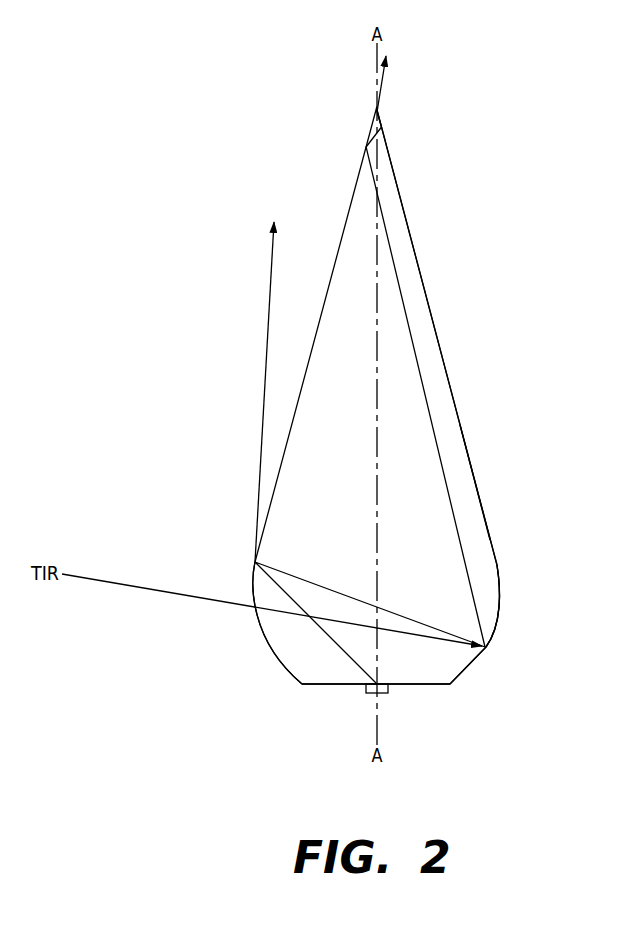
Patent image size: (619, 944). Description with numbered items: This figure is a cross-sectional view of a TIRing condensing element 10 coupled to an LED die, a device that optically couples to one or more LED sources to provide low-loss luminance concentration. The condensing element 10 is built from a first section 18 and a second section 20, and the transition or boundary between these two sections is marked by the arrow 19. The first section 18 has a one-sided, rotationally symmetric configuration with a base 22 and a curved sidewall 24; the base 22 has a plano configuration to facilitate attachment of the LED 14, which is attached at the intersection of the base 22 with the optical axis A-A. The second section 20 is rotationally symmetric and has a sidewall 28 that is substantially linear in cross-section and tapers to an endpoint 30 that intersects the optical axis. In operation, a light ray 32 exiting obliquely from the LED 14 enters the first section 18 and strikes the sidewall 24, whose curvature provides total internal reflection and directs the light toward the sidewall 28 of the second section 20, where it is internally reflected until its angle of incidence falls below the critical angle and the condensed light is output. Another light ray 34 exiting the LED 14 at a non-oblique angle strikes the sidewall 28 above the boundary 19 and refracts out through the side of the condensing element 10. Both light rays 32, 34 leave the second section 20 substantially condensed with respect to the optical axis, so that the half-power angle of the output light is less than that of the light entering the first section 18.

The TIRing condensing element 10 is at (340, 517).
The LED 14 is at (382, 693).
The first section 18 is at (513, 634).
The transition or boundary 19 is at (236, 577).
The second section 20 is at (478, 387).
The base 22 is at (337, 685).
The sidewall 24 is at (500, 616).
The sidewall 28 is at (477, 461).
The endpoint 30 is at (373, 107).
The light ray 32 is at (457, 524).
The light ray 34 is at (262, 428).